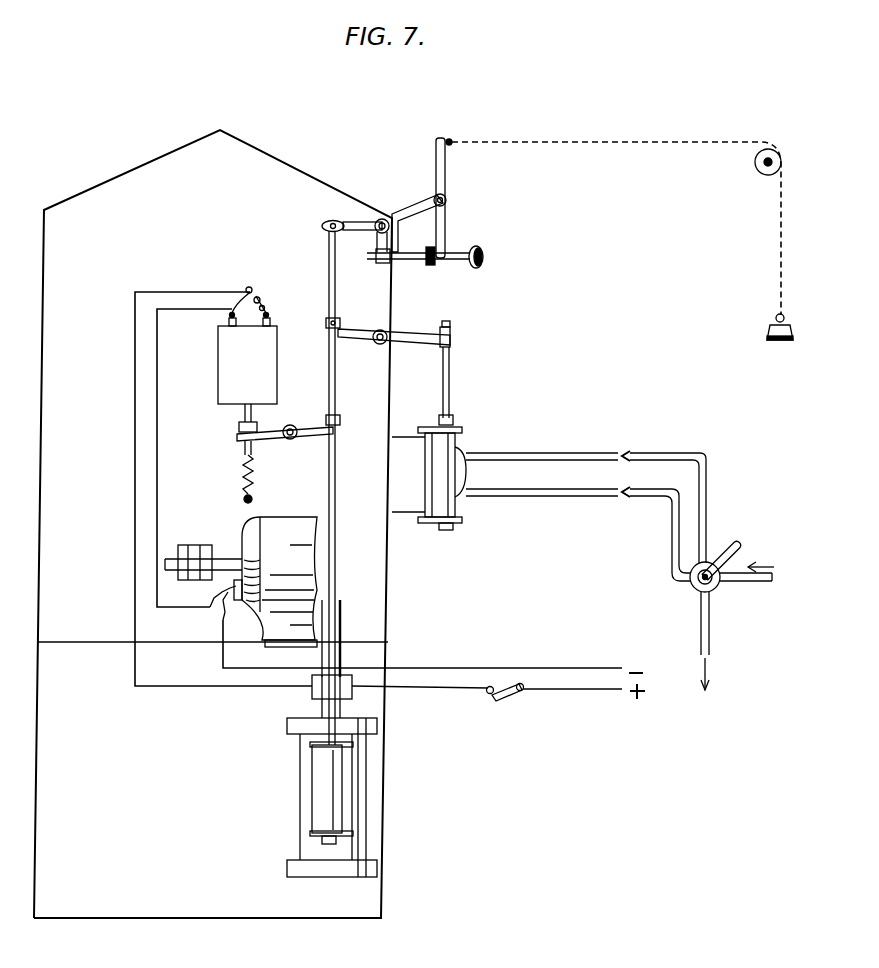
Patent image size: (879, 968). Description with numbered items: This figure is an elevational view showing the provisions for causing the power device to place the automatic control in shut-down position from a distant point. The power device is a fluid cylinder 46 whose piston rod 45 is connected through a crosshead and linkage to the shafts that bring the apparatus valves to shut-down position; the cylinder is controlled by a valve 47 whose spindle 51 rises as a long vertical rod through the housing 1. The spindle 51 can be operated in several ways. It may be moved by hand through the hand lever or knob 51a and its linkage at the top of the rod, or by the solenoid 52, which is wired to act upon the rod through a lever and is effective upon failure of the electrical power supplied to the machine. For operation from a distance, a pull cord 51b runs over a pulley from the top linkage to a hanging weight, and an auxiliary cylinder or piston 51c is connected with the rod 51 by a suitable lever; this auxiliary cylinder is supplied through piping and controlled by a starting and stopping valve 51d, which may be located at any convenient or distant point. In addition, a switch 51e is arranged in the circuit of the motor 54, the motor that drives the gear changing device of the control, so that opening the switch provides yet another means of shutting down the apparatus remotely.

The housing 1 is at (392, 616).
The piston rod 45 is at (343, 630).
The fluid cylinder 46 is at (299, 780).
The valve 47 is at (343, 796).
The spindle 51 is at (337, 490).
The hand lever or knob 51a is at (484, 260).
The pull cord 51b is at (780, 258).
The auxiliary cylinder or piston 51c is at (462, 445).
The starting and stopping valve 51d is at (717, 589).
The switch 51e is at (515, 698).
The solenoid 52 is at (218, 358).
The motor 54 is at (248, 537).